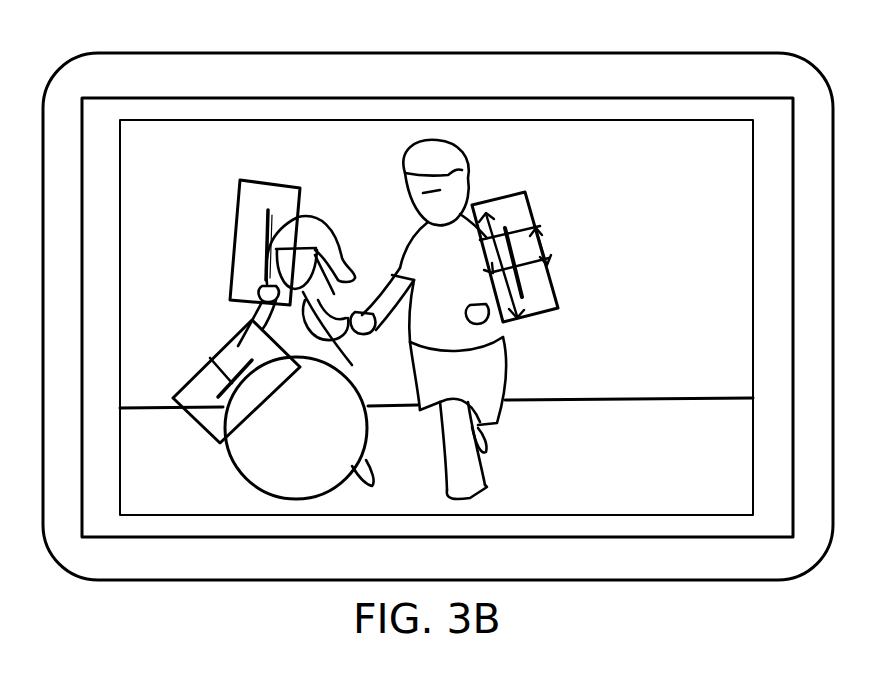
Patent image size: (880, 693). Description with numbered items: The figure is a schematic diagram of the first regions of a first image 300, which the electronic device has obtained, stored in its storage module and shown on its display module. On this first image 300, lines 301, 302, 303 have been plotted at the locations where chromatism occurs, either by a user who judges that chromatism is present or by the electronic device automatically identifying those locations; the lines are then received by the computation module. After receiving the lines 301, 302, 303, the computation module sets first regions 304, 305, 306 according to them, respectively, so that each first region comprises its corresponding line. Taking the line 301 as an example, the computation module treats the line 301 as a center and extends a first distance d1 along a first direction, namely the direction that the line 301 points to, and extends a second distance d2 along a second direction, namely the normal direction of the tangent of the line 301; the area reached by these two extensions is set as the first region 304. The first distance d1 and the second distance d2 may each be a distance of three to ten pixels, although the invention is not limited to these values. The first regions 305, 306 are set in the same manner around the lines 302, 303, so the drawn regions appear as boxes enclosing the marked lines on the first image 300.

The first image 300 is at (673, 118).
The line 301 is at (534, 219).
The line 302 is at (262, 260).
The line 303 is at (218, 357).
The first region 304 is at (545, 232).
The first region 305 is at (240, 194).
The first region 306 is at (195, 428).
The first distance d1 is at (548, 303).
The second distance d2 is at (543, 241).